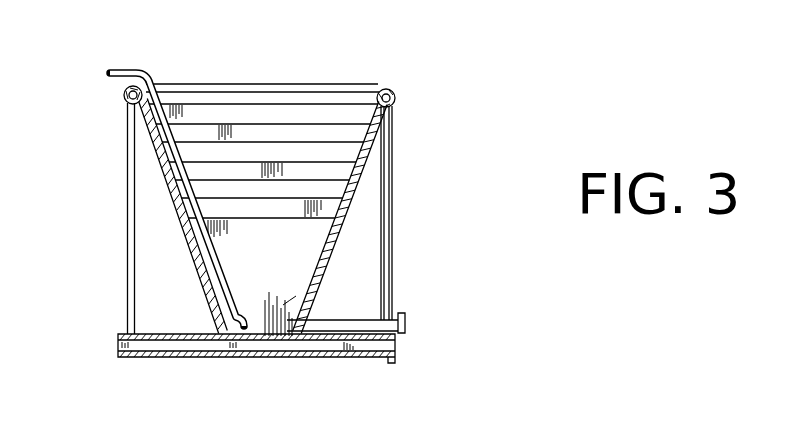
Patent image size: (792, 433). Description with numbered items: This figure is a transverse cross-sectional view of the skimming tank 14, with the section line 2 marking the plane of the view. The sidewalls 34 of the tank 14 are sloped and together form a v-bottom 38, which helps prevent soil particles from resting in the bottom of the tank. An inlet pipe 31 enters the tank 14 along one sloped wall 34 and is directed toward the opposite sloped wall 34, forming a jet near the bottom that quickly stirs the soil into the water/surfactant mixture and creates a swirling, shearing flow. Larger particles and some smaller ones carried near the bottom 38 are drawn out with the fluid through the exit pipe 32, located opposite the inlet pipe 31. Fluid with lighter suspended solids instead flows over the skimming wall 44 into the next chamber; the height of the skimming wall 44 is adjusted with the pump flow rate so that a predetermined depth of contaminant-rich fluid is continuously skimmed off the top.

The section line 2- 2 is at (227, 38).
The tank 14 is at (399, 133).
The inlet pipe 31 is at (175, 152).
The exit pipe 32 is at (382, 322).
The sidewalls 34 is at (352, 178).
The v-bottom 38 is at (285, 305).
The skimming wall 44 is at (335, 150).